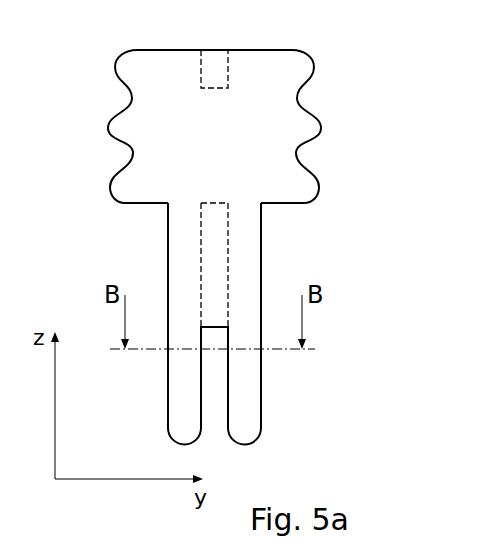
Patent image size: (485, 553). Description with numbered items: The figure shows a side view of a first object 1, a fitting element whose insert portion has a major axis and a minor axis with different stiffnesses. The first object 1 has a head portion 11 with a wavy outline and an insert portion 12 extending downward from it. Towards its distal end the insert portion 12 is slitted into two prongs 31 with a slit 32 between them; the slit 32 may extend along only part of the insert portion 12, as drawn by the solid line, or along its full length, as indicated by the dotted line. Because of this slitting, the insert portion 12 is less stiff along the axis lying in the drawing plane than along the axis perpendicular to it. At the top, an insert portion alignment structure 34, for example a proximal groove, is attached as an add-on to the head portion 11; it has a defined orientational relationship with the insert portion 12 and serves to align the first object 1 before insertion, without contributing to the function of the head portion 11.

The first object 1 is at (208, 243).
The head portion 11 is at (183, 121).
The insert portion 12 is at (185, 248).
The prongs 31 is at (182, 423).
The slit 32 is at (213, 383).
The insert portion alignment structure 34 is at (212, 68).